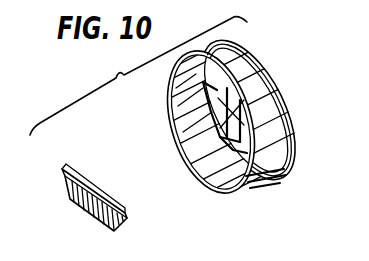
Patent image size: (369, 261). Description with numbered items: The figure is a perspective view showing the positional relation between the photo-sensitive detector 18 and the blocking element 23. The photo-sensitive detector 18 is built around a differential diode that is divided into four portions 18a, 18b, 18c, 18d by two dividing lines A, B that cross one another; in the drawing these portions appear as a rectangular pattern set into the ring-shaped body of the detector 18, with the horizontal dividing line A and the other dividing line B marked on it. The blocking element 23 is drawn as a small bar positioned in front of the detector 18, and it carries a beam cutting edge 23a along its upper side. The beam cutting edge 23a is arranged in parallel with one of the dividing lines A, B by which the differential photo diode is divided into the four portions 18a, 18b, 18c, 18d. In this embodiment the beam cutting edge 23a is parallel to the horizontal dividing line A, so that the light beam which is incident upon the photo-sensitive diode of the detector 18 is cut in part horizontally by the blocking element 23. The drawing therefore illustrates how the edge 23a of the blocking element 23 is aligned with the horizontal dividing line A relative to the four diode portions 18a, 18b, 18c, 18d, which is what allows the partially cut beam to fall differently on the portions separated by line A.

The photo-sensitive detector 18 is at (300, 142).
The first portion of differential diode 18a is at (228, 97).
The second portion of differential diode 18b is at (253, 121).
The third portion of differential diode 18c is at (181, 142).
The fourth portion of differential diode 18d is at (218, 160).
The blocking element 23 is at (91, 208).
The beam cutting edge 23a is at (97, 178).
The horizontal dividing line A is at (243, 178).
The dividing line B is at (222, 150).